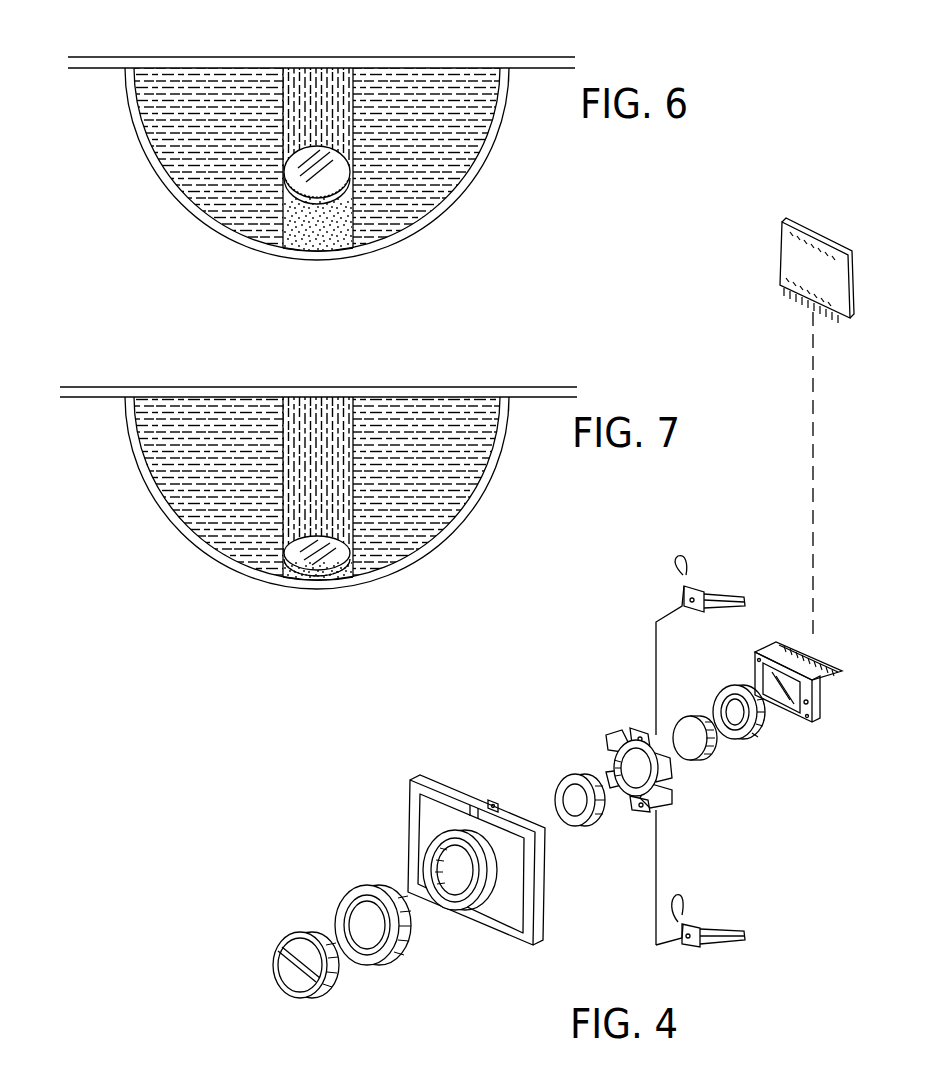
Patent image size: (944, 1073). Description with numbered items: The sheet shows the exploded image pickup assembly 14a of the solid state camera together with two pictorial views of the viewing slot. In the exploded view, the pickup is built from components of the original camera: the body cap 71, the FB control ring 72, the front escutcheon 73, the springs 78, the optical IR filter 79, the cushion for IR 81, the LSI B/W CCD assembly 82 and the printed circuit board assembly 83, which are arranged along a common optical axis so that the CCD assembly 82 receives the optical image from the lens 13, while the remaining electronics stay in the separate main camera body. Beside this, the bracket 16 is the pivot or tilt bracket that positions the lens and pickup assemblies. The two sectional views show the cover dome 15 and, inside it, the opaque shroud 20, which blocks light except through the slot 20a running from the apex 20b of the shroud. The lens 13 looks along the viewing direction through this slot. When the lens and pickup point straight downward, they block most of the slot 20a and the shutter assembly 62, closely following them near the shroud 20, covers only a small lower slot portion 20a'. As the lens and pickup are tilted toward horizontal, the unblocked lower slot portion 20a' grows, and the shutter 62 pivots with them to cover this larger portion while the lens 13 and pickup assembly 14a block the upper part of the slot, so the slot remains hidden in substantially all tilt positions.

In FIG. 6, the lens 13 is at (312, 82).
In FIG. 7, the lens 13 is at (315, 415).
In FIG. 6, the solid state image pickup assembly 14a is at (318, 158).
In FIG. 7, the solid state image pickup assembly 14a is at (318, 487).
In FIG. 6, the dome 15 is at (455, 205).
In FIG. 7, the dome 15 is at (465, 525).
In FIG. 4, the dome 15 is at (556, 790).
In FIG. 6, the shroud 20 is at (478, 162).
In FIG. 7, the shroud 20 is at (490, 475).
In FIG. 6, the slot 20a is at (420, 212).
In FIG. 7, the slot 20a is at (388, 566).
In FIG. 6, the lower slot portion 20a' is at (412, 256).
In FIG. 7, the lower slot portion 20a' is at (397, 609).
In FIG. 6, the apex 20b is at (300, 256).
In FIG. 7, the apex 20b is at (293, 585).
In FIG. 6, the shutter assembly 62 is at (316, 245).
In FIG. 7, the shutter assembly 62 is at (316, 580).
In FIG. 4, the bracket 16 is at (672, 800).
In FIG. 4, the body cap 71 is at (282, 940).
In FIG. 4, the FB control ring 72 is at (338, 903).
In FIG. 4, the front escutcheon 73 is at (412, 779).
In FIG. 4, the springs 78 is at (684, 574).
In FIG. 4, the optical IR filter 79 is at (688, 718).
In FIG. 4, the cushion for IR 81 is at (725, 690).
In FIG. 4, the LSI B/W CCD assembly 82 is at (808, 718).
In FIG. 4, the printed circuit board assembly 83 is at (838, 290).